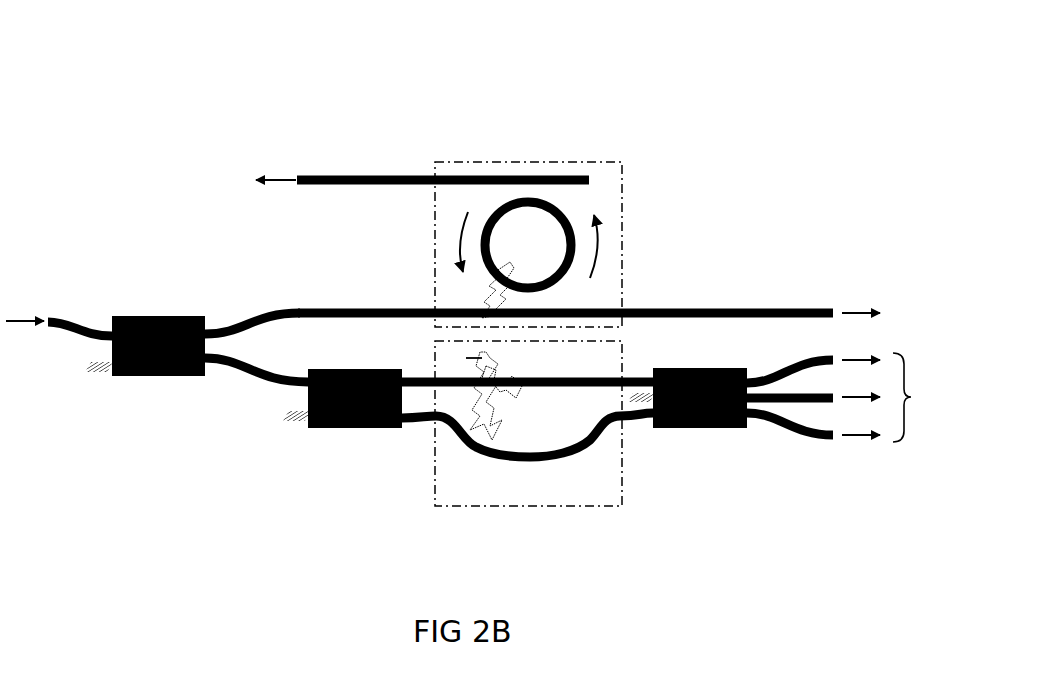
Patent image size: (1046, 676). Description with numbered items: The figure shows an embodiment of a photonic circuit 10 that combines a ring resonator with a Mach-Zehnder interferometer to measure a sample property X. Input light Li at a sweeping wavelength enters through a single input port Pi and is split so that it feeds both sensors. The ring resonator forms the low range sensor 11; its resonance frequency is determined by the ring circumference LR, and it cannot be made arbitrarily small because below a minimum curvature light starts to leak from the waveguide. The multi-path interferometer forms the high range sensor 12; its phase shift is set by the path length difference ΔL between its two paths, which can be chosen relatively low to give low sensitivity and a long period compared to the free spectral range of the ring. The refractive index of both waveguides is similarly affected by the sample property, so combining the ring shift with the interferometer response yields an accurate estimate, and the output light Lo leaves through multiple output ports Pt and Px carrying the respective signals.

The photonic circuit 10 is at (166, 147).
The low range sensor 11 is at (614, 192).
The high range sensor 12 is at (452, 480).